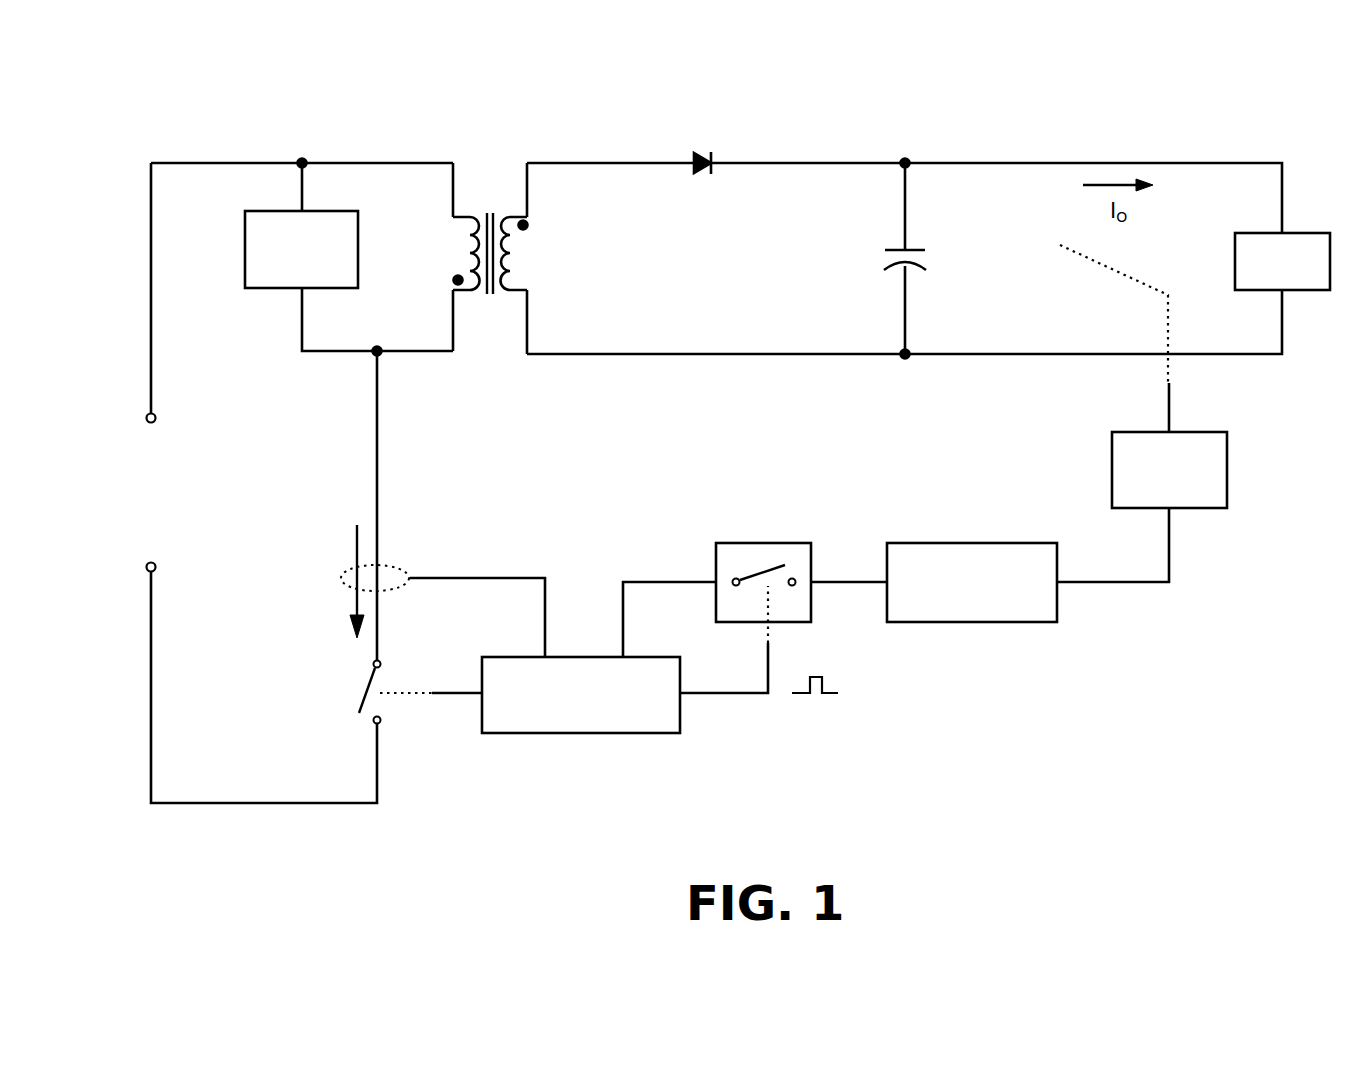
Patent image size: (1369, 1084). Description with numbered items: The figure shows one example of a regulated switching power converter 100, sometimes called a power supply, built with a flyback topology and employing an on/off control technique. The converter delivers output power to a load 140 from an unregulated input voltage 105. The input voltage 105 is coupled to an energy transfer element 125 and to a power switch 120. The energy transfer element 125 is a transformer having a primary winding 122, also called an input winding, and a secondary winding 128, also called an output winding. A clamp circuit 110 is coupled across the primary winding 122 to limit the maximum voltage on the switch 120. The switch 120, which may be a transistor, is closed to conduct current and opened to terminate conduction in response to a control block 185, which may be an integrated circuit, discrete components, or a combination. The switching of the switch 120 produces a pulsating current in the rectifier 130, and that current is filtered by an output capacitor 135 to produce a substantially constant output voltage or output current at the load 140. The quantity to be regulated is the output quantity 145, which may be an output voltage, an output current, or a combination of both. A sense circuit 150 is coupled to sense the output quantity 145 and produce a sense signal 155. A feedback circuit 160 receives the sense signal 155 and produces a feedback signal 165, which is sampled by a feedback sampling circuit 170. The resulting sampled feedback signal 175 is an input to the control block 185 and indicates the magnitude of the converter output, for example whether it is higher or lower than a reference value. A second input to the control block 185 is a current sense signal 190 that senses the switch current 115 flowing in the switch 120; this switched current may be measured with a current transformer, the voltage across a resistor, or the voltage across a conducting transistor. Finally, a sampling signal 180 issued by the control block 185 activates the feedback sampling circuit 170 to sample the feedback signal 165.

The switching power converter 100 is at (927, 98).
The input voltage V_IN 105 is at (122, 518).
The clamp circuit 110 is at (250, 298).
The current I_D 115 is at (340, 523).
The power switch S1 120 is at (352, 683).
The primary winding 122 is at (462, 255).
The energy transfer element T1 125 is at (490, 303).
The secondary winding 128 is at (531, 251).
The rectifier D1 130 is at (688, 153).
The capacitor C1 135 is at (893, 235).
The load 140 is at (1305, 225).
The output quantity U_O 145 is at (1160, 383).
The sense circuit 150 is at (1240, 460).
The sense signal U_SENSE 155 is at (1183, 562).
The feedback circuit 160 is at (977, 540).
The feedback signal U_FB 165 is at (838, 590).
The feedback sampling circuit 170 is at (765, 540).
The sampled feedback signal U_FB* 175 is at (641, 595).
The sampling signal P_S 180 is at (735, 708).
The control block 185 is at (575, 740).
The current sense signal 190 is at (530, 590).